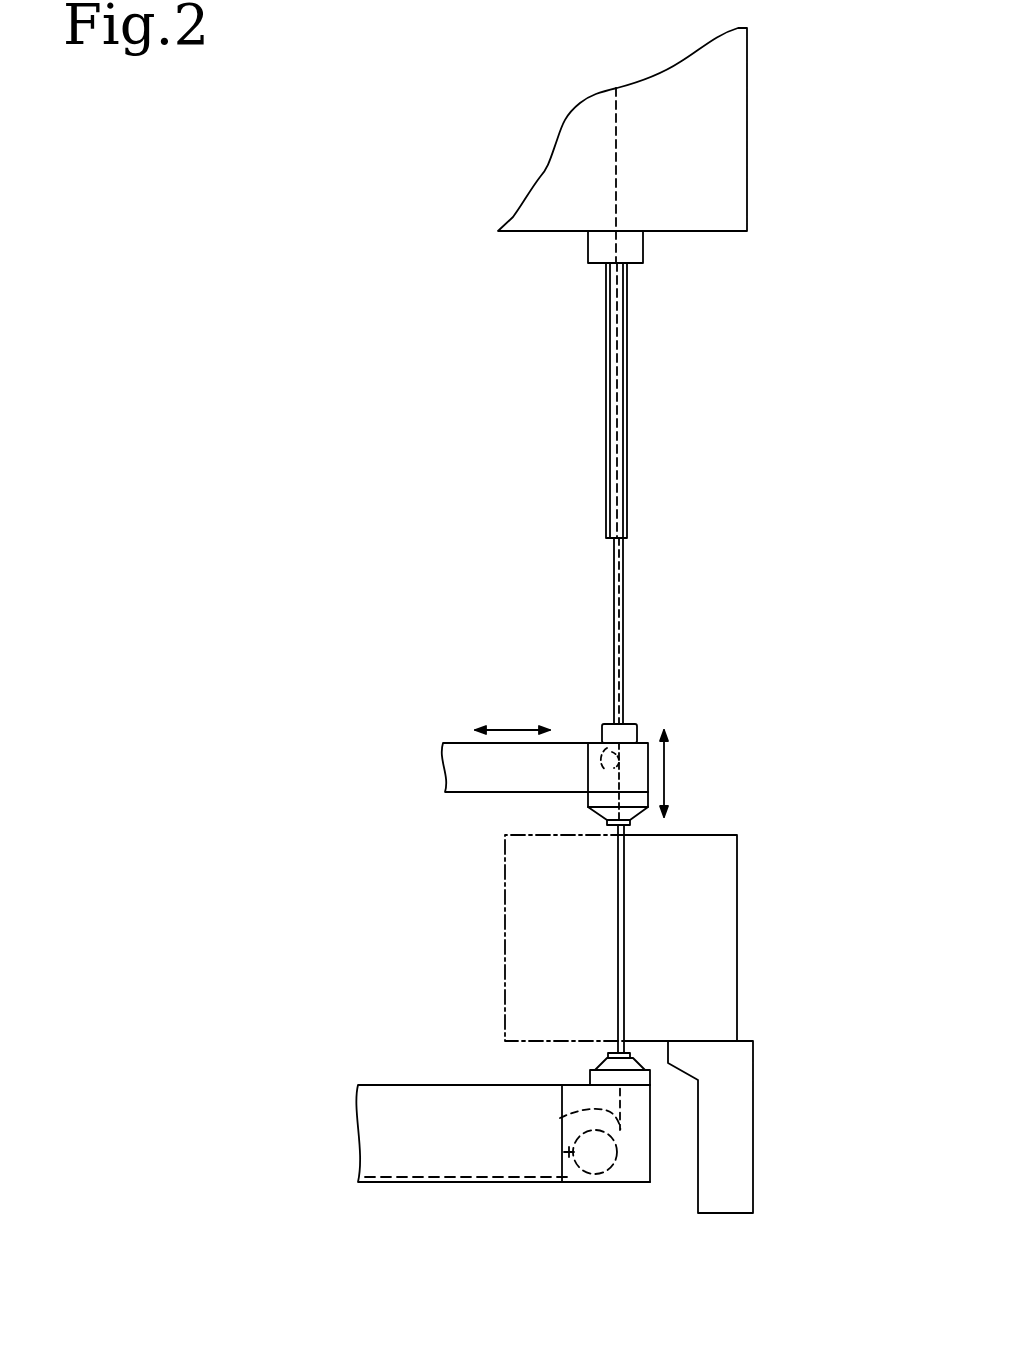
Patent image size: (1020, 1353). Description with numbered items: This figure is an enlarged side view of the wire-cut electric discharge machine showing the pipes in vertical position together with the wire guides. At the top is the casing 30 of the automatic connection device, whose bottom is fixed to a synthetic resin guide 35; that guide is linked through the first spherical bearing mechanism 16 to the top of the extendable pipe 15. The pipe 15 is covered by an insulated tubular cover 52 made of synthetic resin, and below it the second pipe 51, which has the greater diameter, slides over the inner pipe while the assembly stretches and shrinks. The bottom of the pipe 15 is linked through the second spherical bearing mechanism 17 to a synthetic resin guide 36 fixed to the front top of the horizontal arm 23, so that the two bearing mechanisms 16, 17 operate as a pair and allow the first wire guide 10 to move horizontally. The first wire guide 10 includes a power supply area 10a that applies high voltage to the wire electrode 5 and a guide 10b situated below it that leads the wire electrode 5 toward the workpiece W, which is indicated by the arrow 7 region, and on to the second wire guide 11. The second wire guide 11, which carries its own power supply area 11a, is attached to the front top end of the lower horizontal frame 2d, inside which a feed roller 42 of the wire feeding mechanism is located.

The casing 30 is at (747, 128).
The synthetic resin guide 35 is at (588, 250).
The first spherical bearing mechanism 16 is at (644, 271).
The tubular cover 52 is at (627, 433).
The pipe 15 is at (613, 593).
The second pipe 51 is at (624, 617).
The synthetic resin guide 36 is at (605, 733).
The second spherical bearing mechanism 17 is at (648, 712).
The power supply area 10a is at (580, 742).
The horizontal arm 23 is at (477, 793).
The first wire guide 10 is at (588, 808).
The guide 10b is at (630, 823).
The workpiece clamping region 7 is at (488, 943).
The workpiece W is at (737, 917).
The wire electrode 5 is at (618, 925).
The second wire guide 11 is at (590, 1068).
The power supply area 11a is at (560, 1118).
The lower horizontal frame 2d is at (467, 1182).
The feed roller 42 is at (568, 1157).